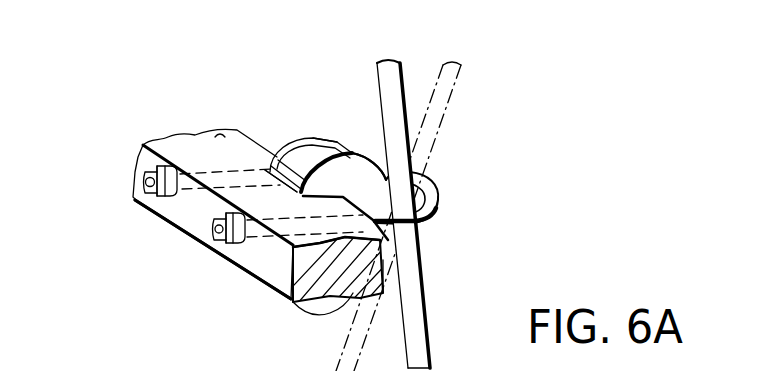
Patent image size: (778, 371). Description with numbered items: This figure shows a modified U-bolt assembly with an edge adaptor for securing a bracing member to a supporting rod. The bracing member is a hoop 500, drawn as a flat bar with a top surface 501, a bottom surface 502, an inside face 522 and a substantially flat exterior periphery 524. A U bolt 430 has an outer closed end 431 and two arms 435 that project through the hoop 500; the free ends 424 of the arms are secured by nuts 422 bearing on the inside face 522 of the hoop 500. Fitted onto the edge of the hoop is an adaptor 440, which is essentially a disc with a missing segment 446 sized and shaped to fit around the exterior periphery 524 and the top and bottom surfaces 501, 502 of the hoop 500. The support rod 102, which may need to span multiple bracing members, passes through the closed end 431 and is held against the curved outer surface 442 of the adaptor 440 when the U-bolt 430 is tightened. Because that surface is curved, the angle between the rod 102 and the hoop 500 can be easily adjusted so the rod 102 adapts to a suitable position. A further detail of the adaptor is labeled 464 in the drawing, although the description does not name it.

The support rod 102 is at (460, 66).
The nuts 422 is at (160, 208).
The free ends 424 is at (143, 183).
The U bolt 430 is at (437, 193).
The outer closed end 431 is at (440, 202).
The arms 435 is at (407, 222).
The adaptor 440 is at (313, 148).
The curved outer surface 442 is at (363, 185).
The missing segment 446 is at (283, 152).
The ring top edge 464 is at (335, 143).
The hoop 500 is at (183, 143).
The top surface 501 is at (220, 140).
The bottom surface 502 is at (240, 263).
The inside face 522 is at (287, 273).
The exterior periphery 524 is at (392, 280).